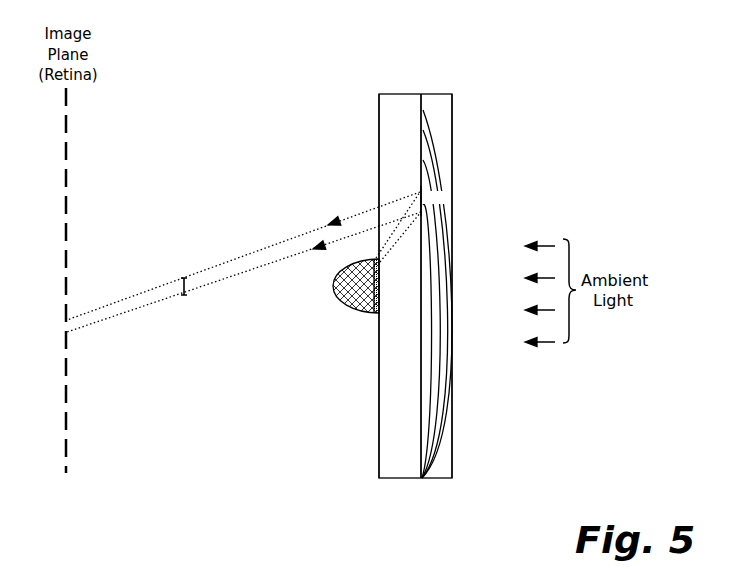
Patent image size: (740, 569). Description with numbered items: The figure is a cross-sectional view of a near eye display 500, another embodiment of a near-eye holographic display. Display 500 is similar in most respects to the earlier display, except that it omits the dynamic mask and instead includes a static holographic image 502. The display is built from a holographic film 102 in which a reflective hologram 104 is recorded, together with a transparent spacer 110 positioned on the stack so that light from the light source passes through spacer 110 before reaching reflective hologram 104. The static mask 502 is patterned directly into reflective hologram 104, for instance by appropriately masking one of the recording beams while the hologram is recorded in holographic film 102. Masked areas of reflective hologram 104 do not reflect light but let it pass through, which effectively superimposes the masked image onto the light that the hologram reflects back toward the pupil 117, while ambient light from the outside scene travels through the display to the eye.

The near eye display 500 is at (497, 113).
The static holographic image 502 is at (438, 196).
The holographic film 102 is at (346, 296).
The reflective hologram 104 is at (444, 387).
The transparent spacer 110 is at (385, 470).
The pupil 117 is at (183, 281).